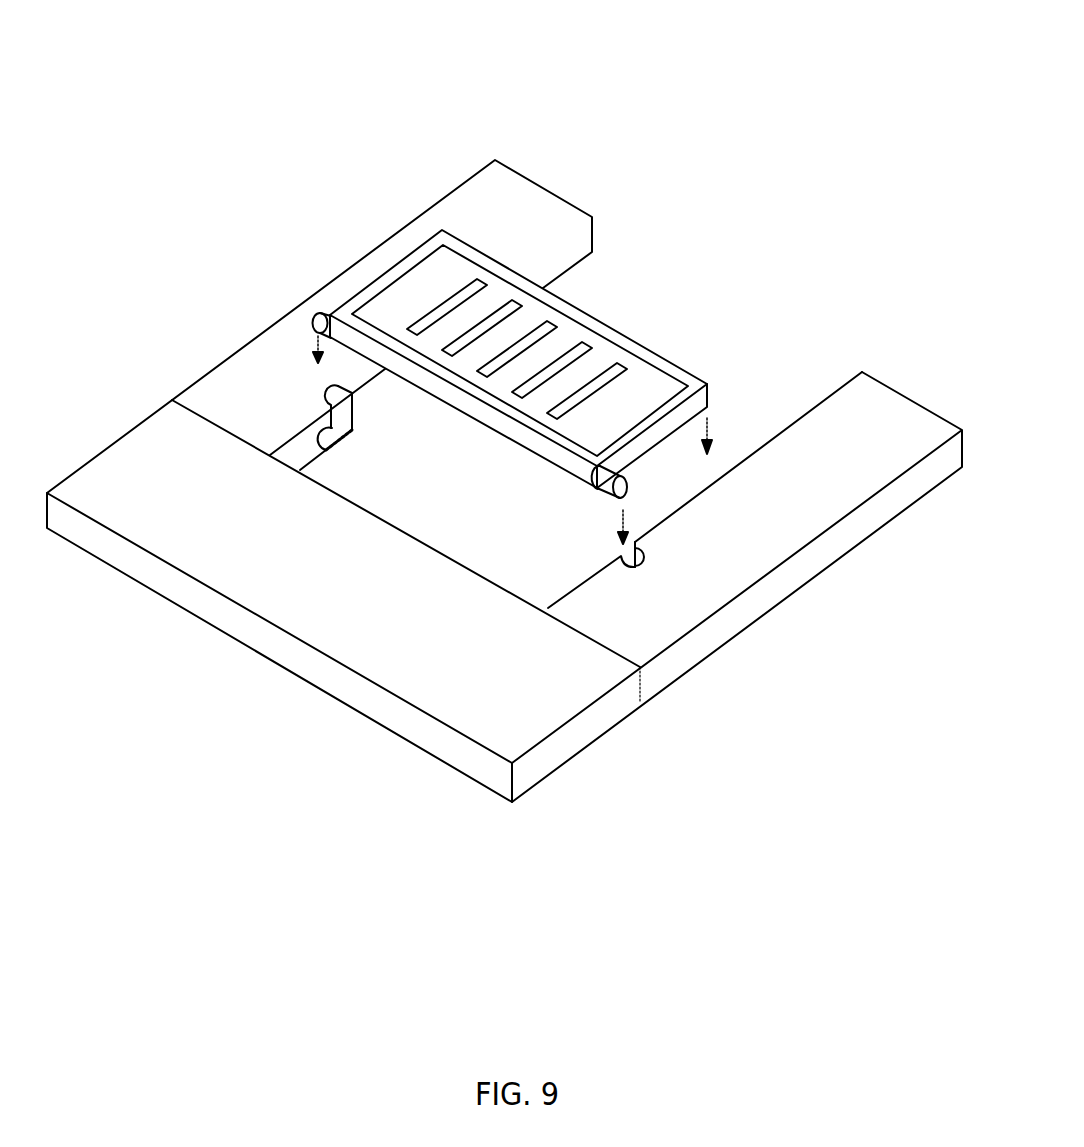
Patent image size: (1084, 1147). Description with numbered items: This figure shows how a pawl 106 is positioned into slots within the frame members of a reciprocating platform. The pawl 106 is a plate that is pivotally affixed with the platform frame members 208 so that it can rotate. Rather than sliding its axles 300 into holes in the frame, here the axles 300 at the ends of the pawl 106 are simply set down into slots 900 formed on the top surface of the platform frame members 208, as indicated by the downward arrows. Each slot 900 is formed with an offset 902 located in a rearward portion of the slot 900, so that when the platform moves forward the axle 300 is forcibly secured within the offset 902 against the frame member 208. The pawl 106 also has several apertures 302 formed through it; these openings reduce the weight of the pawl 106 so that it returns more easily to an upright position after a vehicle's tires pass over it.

The pawl 106 is at (440, 298).
The platform frame member 208 is at (208, 402).
The axle 300 is at (320, 316).
The aperture 302 is at (508, 305).
The slot 900 is at (327, 394).
The offset 902 is at (327, 437).